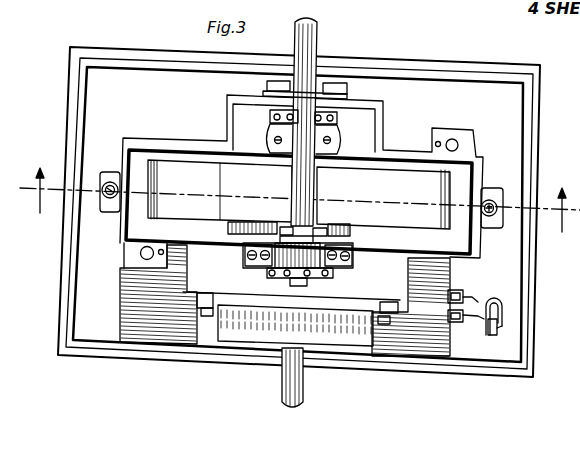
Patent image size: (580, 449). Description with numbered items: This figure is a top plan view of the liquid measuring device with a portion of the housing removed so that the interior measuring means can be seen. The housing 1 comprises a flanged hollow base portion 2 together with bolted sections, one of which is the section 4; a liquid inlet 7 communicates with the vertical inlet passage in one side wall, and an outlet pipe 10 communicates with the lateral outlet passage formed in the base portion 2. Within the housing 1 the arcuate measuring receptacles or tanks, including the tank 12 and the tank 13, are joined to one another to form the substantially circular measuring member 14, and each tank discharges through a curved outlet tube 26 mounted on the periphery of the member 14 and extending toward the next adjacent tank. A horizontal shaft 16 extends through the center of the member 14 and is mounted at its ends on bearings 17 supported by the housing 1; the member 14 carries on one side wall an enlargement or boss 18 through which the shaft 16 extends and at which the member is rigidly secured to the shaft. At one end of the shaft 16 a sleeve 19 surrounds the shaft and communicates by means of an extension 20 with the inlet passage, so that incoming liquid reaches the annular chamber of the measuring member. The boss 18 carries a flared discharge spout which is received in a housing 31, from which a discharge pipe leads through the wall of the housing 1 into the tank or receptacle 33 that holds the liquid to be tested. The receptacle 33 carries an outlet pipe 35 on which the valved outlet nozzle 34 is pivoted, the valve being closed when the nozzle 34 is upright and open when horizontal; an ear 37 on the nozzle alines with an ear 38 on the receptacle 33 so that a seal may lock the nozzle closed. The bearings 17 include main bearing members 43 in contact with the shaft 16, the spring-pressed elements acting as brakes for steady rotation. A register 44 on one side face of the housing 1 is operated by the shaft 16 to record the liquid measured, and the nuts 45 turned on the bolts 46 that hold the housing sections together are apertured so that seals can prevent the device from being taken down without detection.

The housing 1 is at (394, 138).
The flanged hollow base portion 2 is at (430, 90).
The section 4 is at (171, 148).
The liquid inlet 7 is at (307, 0).
The outlet pipe 10 is at (292, 387).
The measuring receptacle 12 is at (383, 198).
The measuring receptacle 13 is at (220, 191).
The measuring member 14 is at (146, 165).
The shaft 16 is at (276, 119).
The bearing 17 is at (270, 108).
The boss 18 is at (243, 244).
The sleeve 19 is at (296, 166).
The extension 20 is at (318, 133).
The curved outlet tube 26 is at (228, 229).
The housing 31 is at (275, 252).
The receptacle 33 is at (180, 320).
The valved outlet nozzle 34 is at (498, 328).
The outlet pipe 35 is at (473, 301).
The ear 37 is at (484, 331).
The ear 38 is at (482, 322).
The main bearing member 43 is at (337, 119).
The register 44 is at (277, 320).
The nut 45 is at (112, 206).
The bolt 46 is at (106, 186).